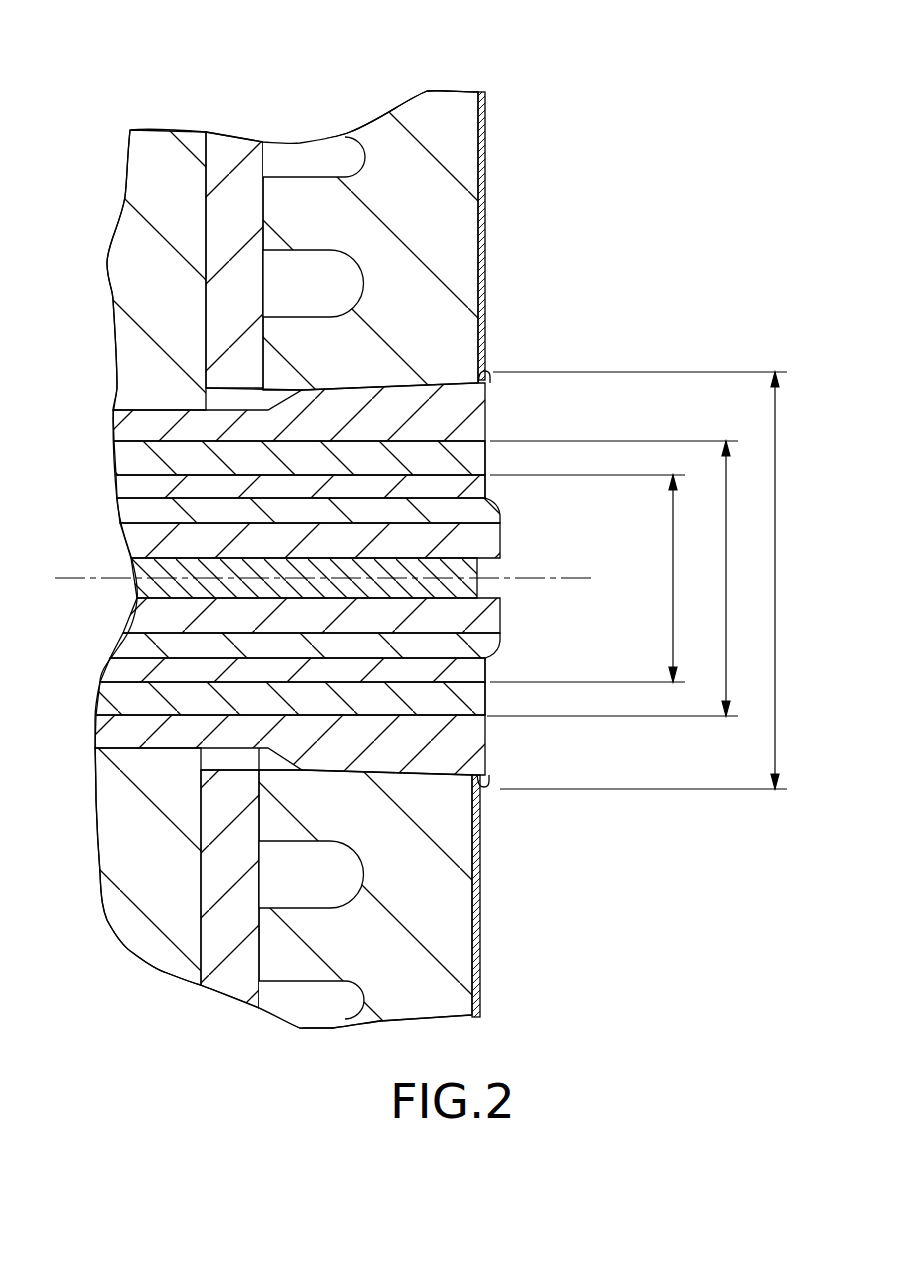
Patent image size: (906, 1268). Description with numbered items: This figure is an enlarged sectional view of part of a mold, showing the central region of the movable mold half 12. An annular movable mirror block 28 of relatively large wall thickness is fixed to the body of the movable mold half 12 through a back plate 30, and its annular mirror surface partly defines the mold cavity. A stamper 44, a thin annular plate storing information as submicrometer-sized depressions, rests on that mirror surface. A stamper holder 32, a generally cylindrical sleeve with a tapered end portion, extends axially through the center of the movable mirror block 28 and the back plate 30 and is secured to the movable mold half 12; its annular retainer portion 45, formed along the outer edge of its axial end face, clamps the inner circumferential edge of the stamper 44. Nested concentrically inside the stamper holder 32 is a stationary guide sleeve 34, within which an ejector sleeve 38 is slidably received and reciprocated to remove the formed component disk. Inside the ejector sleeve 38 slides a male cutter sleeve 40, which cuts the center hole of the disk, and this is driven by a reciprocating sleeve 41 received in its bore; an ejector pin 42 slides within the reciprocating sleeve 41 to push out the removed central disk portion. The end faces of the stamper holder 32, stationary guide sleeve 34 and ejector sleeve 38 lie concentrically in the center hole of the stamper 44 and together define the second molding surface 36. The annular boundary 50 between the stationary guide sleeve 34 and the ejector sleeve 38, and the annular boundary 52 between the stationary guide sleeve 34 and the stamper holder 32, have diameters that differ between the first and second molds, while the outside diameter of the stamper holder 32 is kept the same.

The movable mold half 12 is at (312, 104).
The movable mirror block 28 is at (458, 940).
The back plate 30 is at (225, 308).
The stamper holder 32 is at (343, 760).
The stationary guide sleeve 34 is at (122, 457).
The second molding surface 36 is at (488, 403).
The ejector sleeve 38 is at (137, 675).
The male cutter sleeve 40 is at (140, 509).
The reciprocating sleeve 41 is at (173, 543).
The ejector pin 42 is at (148, 585).
The stamper 44 is at (483, 240).
The annular retainer portion 45 is at (489, 783).
The annular boundary 50 is at (489, 471).
The annular boundary 52 is at (487, 718).